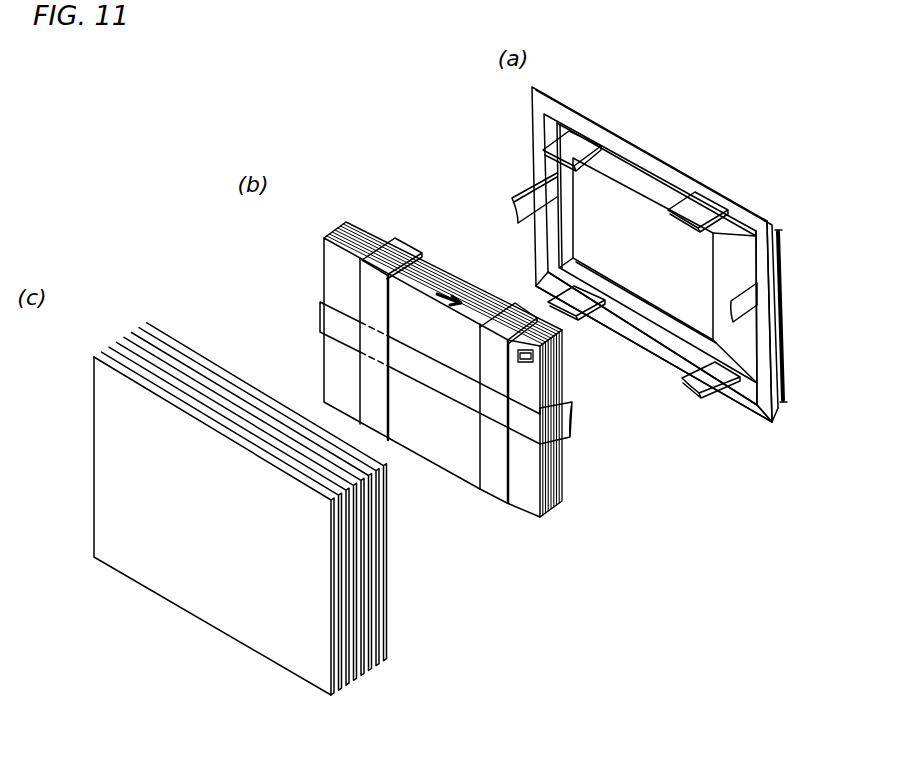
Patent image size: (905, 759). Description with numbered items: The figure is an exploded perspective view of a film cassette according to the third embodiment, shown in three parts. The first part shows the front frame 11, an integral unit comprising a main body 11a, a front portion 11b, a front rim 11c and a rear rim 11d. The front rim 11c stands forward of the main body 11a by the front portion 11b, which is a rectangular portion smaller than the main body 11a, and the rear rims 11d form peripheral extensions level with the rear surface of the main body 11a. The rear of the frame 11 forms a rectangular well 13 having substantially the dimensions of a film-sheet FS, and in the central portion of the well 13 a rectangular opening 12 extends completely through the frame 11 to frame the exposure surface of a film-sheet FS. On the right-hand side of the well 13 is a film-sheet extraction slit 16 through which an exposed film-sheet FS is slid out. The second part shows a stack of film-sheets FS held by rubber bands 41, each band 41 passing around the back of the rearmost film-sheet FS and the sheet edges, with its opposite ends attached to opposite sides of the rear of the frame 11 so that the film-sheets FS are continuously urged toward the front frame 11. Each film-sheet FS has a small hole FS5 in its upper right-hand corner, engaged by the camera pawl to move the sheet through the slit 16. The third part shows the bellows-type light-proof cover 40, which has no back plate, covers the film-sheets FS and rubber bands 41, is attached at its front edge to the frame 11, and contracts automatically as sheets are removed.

The front frame 11 is at (685, 270).
The main body 11a is at (763, 347).
The front portion 11b is at (749, 349).
The front rim 11c is at (678, 322).
The rear rim 11d is at (775, 423).
The opening 12 is at (640, 293).
The well 13 is at (745, 247).
The film-sheet extraction slit 16 is at (783, 304).
The bellows-type light-proof cover 40 is at (128, 345).
The rubber band 41 is at (400, 252).
The film-sheet FS is at (340, 226).
The small hole FS5 is at (523, 363).